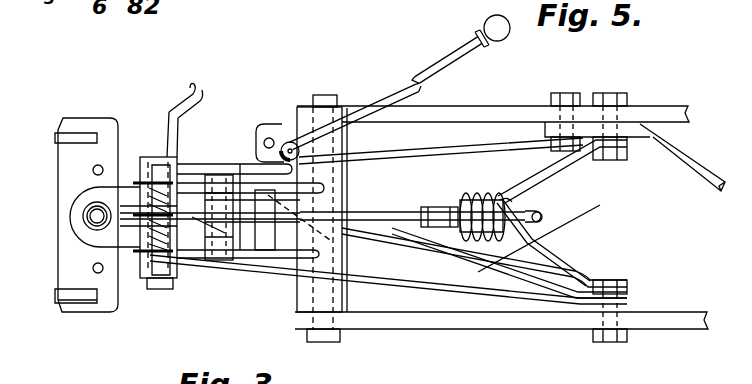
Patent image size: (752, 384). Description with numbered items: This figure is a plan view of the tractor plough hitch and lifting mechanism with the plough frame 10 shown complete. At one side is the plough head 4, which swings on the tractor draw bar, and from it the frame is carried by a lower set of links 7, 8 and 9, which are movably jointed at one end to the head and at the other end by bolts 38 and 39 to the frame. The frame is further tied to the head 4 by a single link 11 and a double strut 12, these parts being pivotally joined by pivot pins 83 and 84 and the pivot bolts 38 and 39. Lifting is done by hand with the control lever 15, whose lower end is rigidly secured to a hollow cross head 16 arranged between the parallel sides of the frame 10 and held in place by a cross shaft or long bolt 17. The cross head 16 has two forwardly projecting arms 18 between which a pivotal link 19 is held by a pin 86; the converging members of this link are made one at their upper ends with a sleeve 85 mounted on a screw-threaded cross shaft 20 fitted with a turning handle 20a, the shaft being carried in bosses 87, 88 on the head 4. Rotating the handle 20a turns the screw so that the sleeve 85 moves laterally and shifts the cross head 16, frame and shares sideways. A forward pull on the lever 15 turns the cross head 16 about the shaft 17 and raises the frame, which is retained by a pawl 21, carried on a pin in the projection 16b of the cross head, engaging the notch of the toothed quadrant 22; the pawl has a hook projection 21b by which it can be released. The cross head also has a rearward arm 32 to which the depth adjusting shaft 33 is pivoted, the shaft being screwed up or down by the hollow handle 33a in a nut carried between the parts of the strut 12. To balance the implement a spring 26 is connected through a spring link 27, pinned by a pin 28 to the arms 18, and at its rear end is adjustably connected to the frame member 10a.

The plough head 4 is at (100, 235).
The link 7 is at (438, 158).
The link 8 is at (410, 244).
The link 9 is at (470, 300).
The plough frame 10 is at (673, 114).
The plough frame member 10a is at (716, 190).
The single link 11 is at (350, 212).
The double strut 12 is at (565, 152).
The control lever 15 is at (452, 54).
The hollow cross head 16 is at (300, 300).
The projection of the cross head 16b is at (243, 163).
The cross shaft or long bolt 17 is at (324, 343).
The forwardly projecting arms 18 is at (241, 164).
The pivotal link 19 is at (133, 215).
The cross shaft 20 is at (172, 110).
The turning handle 20a is at (214, 68).
The pawl 21 is at (296, 142).
The hook projection 21b is at (272, 124).
The toothed sector or quadrant 22 is at (342, 108).
The spring 26 is at (518, 210).
The spring link 27 is at (436, 207).
The pin 28 is at (262, 262).
The rearward arm 32 is at (347, 200).
The depth adjusting shaft 33 is at (424, 210).
The hollow handle 33a is at (509, 251).
The pivot bolt 38 is at (616, 281).
The pivot bolt 39 is at (632, 80).
The pivot pin 83 is at (127, 207).
The pivot pin 84 is at (472, 196).
The sleeve 85 is at (163, 167).
The pin 86 is at (212, 175).
The boss 87 is at (147, 168).
The boss 88 is at (142, 257).